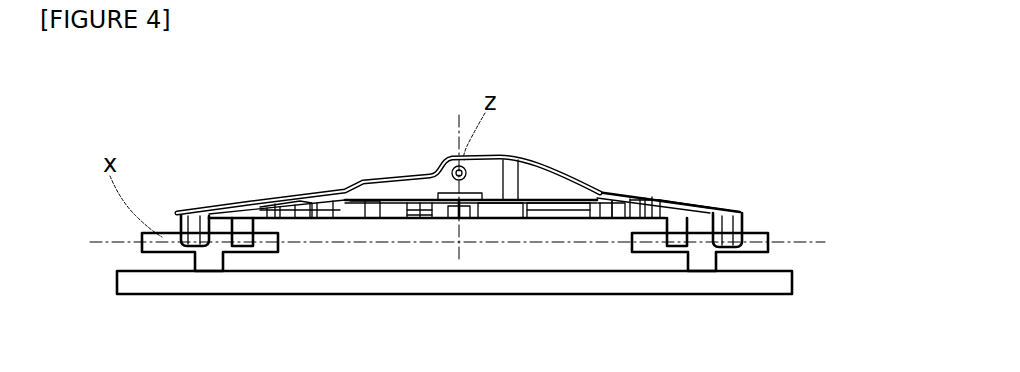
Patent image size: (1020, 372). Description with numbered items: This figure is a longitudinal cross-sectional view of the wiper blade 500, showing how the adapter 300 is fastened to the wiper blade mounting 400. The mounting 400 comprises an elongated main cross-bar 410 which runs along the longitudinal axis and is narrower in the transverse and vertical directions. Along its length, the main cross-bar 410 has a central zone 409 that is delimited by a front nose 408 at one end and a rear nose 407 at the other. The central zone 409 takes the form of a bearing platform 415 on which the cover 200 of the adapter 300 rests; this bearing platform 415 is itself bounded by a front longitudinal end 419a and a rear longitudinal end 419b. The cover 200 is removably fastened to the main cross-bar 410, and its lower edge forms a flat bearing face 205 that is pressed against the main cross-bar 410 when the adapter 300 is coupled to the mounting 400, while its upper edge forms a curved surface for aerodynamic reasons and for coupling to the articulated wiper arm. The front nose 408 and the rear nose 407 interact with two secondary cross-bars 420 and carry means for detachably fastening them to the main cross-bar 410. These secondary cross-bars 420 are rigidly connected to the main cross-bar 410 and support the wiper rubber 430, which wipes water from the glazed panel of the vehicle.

The wiper blade 500 is at (224, 160).
The front nose 408 is at (305, 195).
The front longitudinal end 419a is at (360, 195).
The bearing face 205 is at (424, 195).
The cover 200 is at (492, 160).
The adapter 300 is at (588, 146).
The rear longitudinal end 419b is at (600, 192).
The rear nose 407 is at (640, 193).
The mounting 400 is at (704, 177).
The main cross-bar 410 is at (687, 207).
The secondary cross-bars 420 is at (265, 247).
The central zone 409 is at (413, 208).
The bearing platform 415 is at (413, 208).
The wiper rubber 430 is at (760, 292).